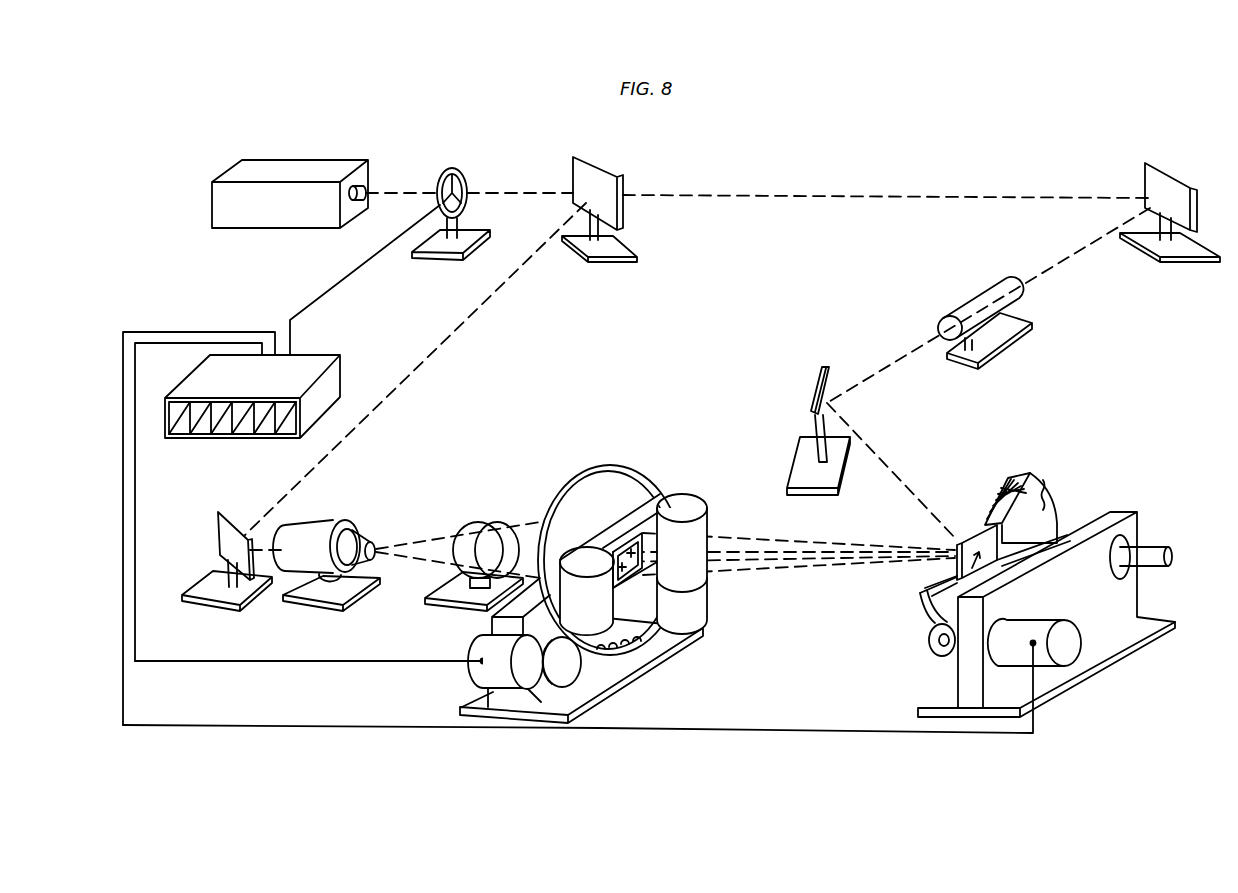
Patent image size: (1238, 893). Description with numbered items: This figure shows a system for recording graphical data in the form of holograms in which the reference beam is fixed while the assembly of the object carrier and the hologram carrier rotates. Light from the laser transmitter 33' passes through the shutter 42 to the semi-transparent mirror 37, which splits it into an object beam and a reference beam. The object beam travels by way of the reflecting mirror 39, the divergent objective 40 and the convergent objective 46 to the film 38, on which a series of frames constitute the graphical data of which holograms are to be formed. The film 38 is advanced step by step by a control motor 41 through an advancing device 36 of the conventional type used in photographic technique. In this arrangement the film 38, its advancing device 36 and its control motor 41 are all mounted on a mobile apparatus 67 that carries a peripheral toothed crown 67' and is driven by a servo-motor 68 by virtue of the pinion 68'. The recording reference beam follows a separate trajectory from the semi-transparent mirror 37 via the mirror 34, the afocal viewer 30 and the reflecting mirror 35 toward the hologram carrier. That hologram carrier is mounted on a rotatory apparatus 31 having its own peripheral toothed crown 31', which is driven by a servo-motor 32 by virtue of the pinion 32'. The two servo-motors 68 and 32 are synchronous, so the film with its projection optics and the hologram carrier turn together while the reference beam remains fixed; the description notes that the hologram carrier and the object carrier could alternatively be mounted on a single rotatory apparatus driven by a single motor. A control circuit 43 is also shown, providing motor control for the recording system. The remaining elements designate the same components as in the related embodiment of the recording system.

The laser transmitter 33' is at (290, 185).
The shutter 42 is at (462, 182).
The semi-transparent mirror 37 is at (578, 180).
The mirror 34 is at (1150, 183).
The afocal viewer 30 is at (975, 310).
The reflecting mirror 35 is at (822, 400).
The peripheral toothed crown 31' is at (1032, 490).
The rotatory apparatus 31 is at (1007, 526).
The servo-motor 32 is at (1034, 626).
The pinion 32' is at (925, 626).
The control circuit 43 is at (278, 394).
The reflecting mirror 39 is at (247, 518).
The divergent objective 40 is at (314, 530).
The convergent objective 46 is at (480, 525).
The mobile apparatus 67 is at (610, 542).
The peripheral toothed crown 67' is at (625, 626).
The advancing device 36 is at (680, 500).
The film 38 is at (632, 545).
The control motor 41 is at (708, 597).
The servo-motor 68 is at (495, 642).
The pinion 68' is at (562, 662).